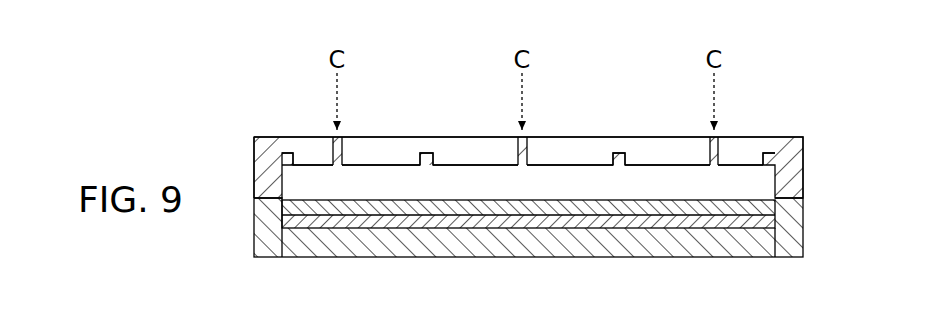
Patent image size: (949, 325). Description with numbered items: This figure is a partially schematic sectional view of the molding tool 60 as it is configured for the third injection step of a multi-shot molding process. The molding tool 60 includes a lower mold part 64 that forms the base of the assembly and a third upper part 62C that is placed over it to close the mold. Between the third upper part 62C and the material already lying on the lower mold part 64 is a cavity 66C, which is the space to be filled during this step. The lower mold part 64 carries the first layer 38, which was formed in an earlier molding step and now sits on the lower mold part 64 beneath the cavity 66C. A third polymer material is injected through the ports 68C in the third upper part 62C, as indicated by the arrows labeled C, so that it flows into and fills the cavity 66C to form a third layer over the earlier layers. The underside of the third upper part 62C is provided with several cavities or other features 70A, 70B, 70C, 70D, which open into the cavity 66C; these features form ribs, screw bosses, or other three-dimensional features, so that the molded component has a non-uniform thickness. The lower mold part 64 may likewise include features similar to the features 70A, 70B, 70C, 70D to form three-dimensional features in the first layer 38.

The first layer 38 is at (298, 223).
The molding tool 60 is at (812, 177).
The third upper part 62C is at (803, 156).
The lower mold part 64 is at (803, 230).
The cavity 66C is at (583, 197).
The ports 68C is at (340, 137).
The cavity or feature 70A is at (288, 165).
The cavity or feature 70B is at (427, 165).
The cavity or feature 70C is at (619, 165).
The cavity or feature 70D is at (768, 165).